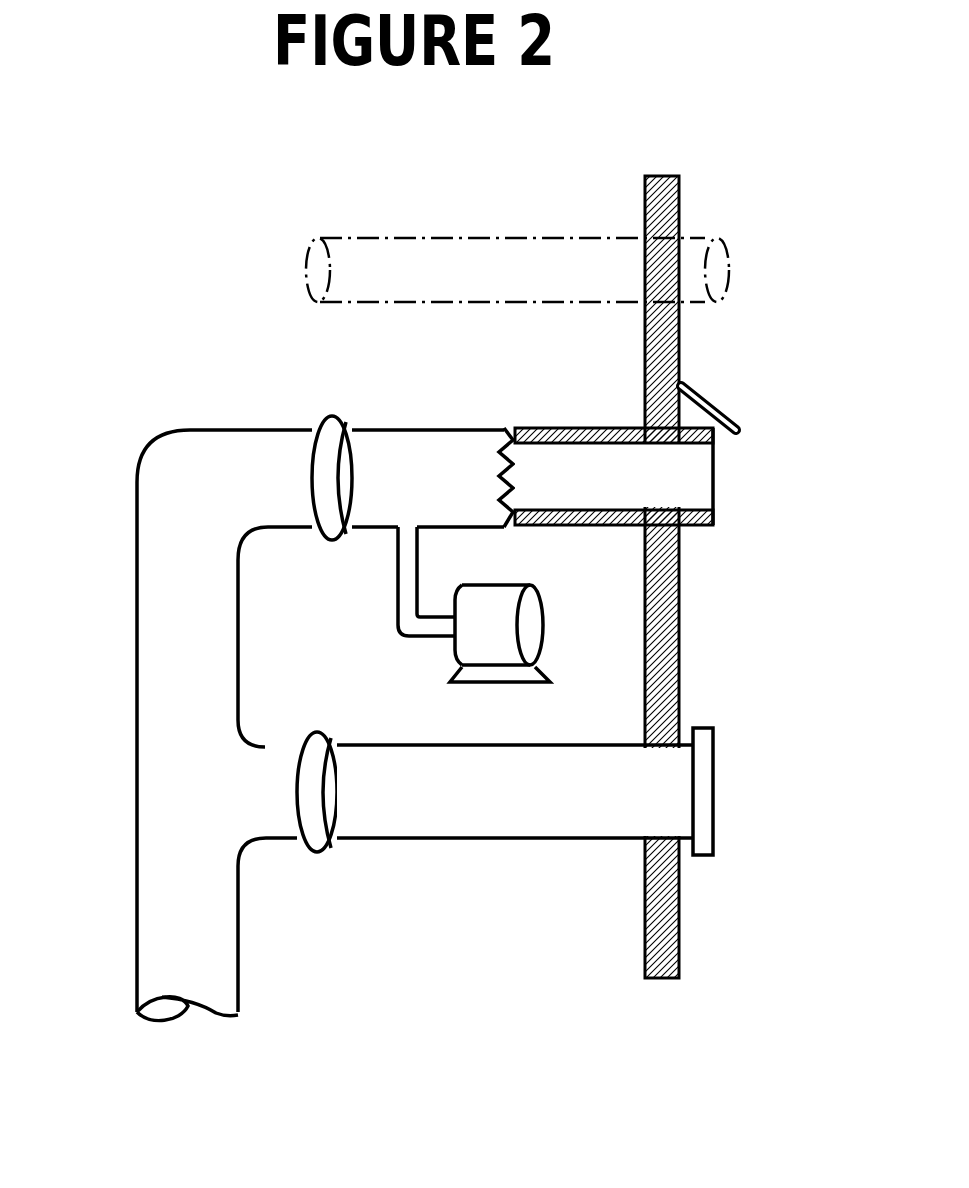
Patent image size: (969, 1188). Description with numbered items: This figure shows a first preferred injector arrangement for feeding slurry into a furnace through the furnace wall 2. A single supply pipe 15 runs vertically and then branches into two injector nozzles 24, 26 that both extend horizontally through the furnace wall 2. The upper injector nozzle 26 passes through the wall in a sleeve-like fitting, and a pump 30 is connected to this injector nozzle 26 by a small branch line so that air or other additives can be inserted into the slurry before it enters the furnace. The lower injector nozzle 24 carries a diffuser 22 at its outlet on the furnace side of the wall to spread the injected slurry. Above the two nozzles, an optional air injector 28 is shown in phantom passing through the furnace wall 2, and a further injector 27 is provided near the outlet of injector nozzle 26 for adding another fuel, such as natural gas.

The furnace wall 2 is at (679, 378).
The pipe 15 is at (137, 742).
The diffuser 22 is at (713, 782).
The injector nozzle 24 is at (390, 840).
The injector nozzle 26 is at (410, 428).
The injector 27 is at (737, 417).
The air injector 28 is at (455, 262).
The pump 30 is at (485, 600).